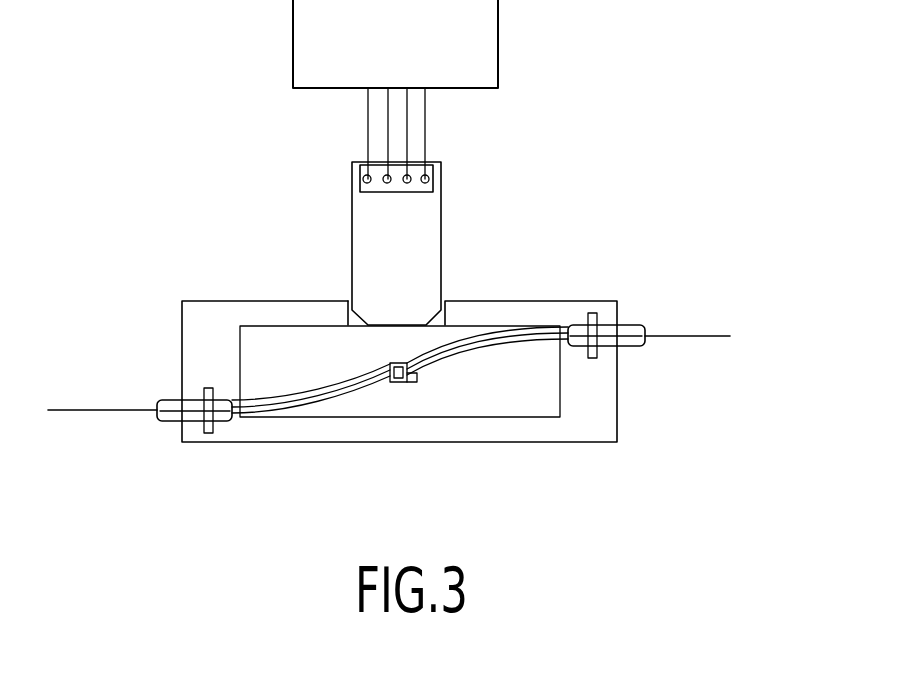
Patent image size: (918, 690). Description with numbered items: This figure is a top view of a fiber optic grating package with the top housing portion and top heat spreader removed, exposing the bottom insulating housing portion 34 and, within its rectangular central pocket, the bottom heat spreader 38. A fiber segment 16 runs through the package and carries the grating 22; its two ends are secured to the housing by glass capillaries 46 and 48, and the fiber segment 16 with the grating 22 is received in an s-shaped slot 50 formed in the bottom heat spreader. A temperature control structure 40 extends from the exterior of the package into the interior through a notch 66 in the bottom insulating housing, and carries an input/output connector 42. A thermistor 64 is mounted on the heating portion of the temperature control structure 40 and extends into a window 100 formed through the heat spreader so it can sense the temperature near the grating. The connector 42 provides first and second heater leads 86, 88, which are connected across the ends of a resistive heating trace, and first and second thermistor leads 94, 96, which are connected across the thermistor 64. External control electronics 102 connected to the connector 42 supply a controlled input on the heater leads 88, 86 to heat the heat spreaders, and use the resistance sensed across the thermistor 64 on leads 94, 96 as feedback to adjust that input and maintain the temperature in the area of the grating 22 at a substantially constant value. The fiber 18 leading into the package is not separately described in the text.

The control electronics 102 is at (498, 42).
The second heater lead 88 is at (360, 165).
The first heater lead 86 is at (428, 172).
The input/output connector 42 is at (440, 172).
The temperature control structure 40 is at (445, 203).
The first thermistor lead 94 is at (387, 193).
The second thermistor lead 96 is at (407, 193).
The notch 66 is at (351, 298).
The thermistor 64 is at (388, 364).
The bottom insulating housing portion 34 is at (566, 300).
The bottom heat spreader 38 is at (537, 402).
The glass capillary 46 is at (182, 400).
The input optical fiber 18 is at (97, 410).
The fiber segment 16 is at (262, 418).
The grating 22 is at (414, 392).
The window 100 is at (388, 369).
The s-shaped slot 50 is at (497, 327).
The glass capillary 48 is at (620, 325).